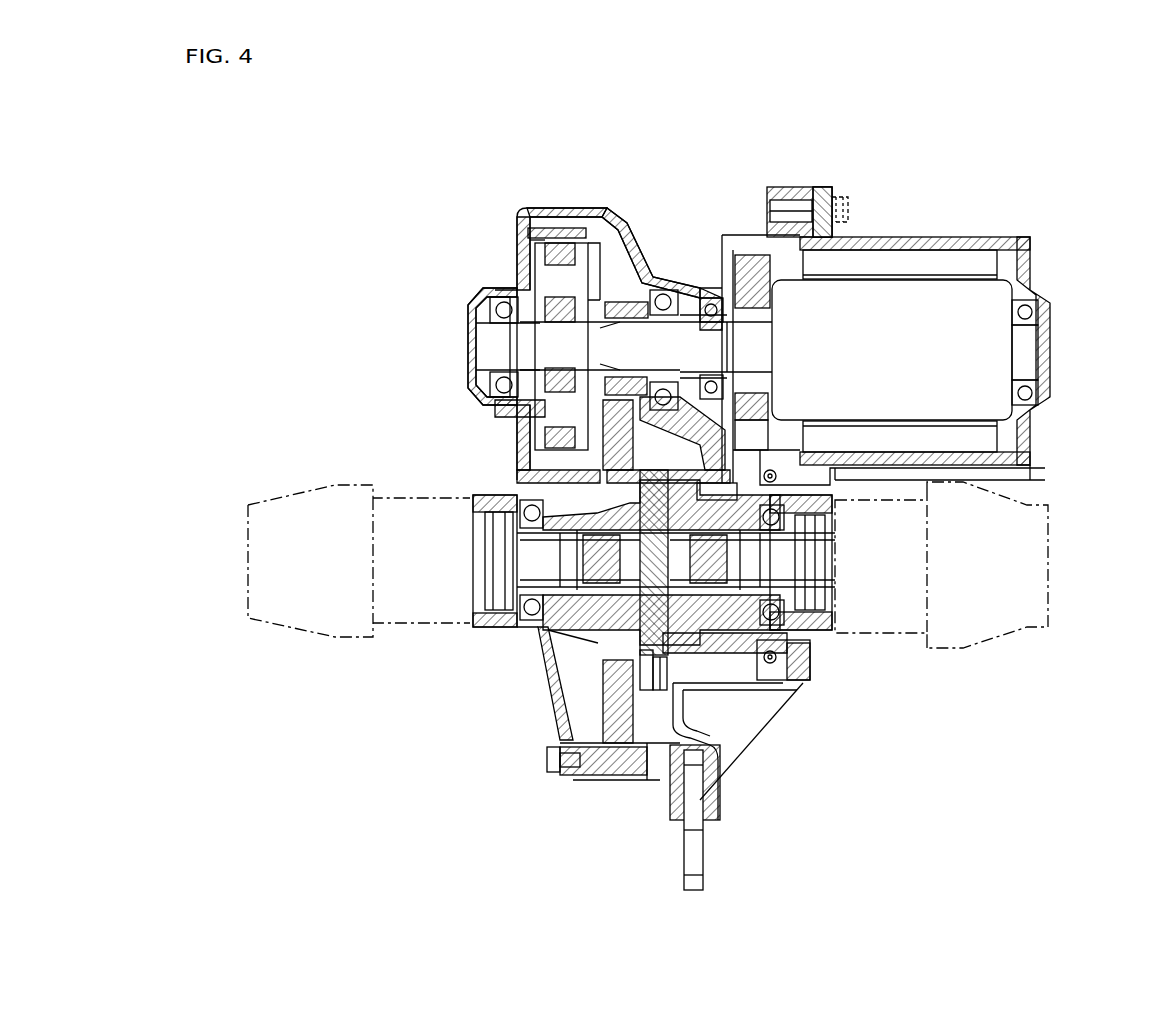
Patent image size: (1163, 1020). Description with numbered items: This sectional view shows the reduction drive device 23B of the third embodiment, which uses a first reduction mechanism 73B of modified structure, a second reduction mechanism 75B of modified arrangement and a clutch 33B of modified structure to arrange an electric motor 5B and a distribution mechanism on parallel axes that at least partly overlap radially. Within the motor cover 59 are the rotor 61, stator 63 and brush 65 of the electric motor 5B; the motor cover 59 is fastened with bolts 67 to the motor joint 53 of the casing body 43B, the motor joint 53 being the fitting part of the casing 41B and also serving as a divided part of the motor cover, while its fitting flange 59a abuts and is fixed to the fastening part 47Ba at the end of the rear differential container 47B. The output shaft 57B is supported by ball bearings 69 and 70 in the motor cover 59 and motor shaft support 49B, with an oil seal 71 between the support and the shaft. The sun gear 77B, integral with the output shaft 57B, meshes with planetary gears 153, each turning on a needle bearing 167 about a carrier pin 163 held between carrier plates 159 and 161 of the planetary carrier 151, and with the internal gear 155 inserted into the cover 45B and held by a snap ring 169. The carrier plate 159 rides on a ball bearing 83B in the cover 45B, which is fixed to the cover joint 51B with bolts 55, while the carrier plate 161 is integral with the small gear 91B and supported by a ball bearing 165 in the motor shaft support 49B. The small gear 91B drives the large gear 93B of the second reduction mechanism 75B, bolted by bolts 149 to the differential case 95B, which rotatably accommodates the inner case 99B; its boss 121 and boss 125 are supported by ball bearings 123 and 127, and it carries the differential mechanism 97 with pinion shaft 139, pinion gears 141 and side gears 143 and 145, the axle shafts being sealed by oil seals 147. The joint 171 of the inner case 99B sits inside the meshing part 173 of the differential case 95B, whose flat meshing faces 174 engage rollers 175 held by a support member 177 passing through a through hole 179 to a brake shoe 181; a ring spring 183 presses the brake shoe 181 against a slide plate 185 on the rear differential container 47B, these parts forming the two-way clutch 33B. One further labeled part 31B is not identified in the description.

The planetary carrier 151 is at (525, 222).
The internal gear 155 is at (540, 235).
The casing 41B is at (532, 215).
The carrier plate 159 is at (518, 242).
The carrier plate 161 is at (600, 243).
The cover joint 51B is at (610, 207).
The small gear 91B is at (660, 289).
The snap ring 169 is at (605, 302).
The casing body 43B is at (645, 250).
The oil seal 71 is at (705, 298).
The motor shaft support 49B is at (715, 296).
The ball bearing 70 is at (738, 262).
The brush 65 is at (752, 258).
The ball bearing 165 is at (690, 322).
The motor joint 53 is at (790, 200).
The bolts 67 is at (840, 197).
The motor cover 59 is at (906, 237).
The rotor 61 is at (926, 270).
The reduction drive device 23B is at (968, 232).
The stator 63 is at (1020, 292).
The ball bearing 69 is at (1037, 302).
The electric motor 5B is at (1052, 330).
The output shaft 57B is at (1030, 345).
The second reduction mechanism 75B is at (775, 343).
The large gear 93B is at (775, 360).
The fastening part 47Ba is at (1000, 478).
The fitting flange 59a is at (870, 482).
The ball bearing 127 is at (833, 502).
The boss 125 is at (820, 537).
The oil seals 147 is at (470, 610).
The through hole 179 is at (800, 650).
The brake shoe 181 is at (790, 660).
The slide plate 185 is at (803, 662).
The rear differential container 47B is at (810, 672).
The ring spring 183 is at (790, 672).
The rollers 175 is at (742, 672).
The support member 177 is at (770, 676).
The meshing faces 174 is at (730, 672).
The side gear 145 is at (700, 752).
The differential mechanism 97 is at (690, 695).
The bolts 149 is at (703, 800).
The pinion gears 141 is at (655, 692).
The pinion shaft 139 is at (622, 742).
The side gear 143 is at (578, 690).
The bolts 55 is at (547, 760).
The housing 31B is at (580, 655).
The ball bearing 123 is at (598, 637).
The boss 121 is at (532, 627).
The planetary gears 153 is at (517, 405).
The sun gear 77B is at (518, 340).
The needle bearing 167 is at (500, 310).
The carrier pins 163 is at (490, 297).
The ball bearing 83B is at (500, 287).
The first reduction mechanism 73B is at (515, 272).
The cover 45B is at (510, 267).
The inner case 99B is at (640, 412).
The differential case 95B is at (758, 480).
The meshing part 173 is at (748, 462).
The two-way clutch 33B is at (776, 470).
The joint 171 is at (740, 540).